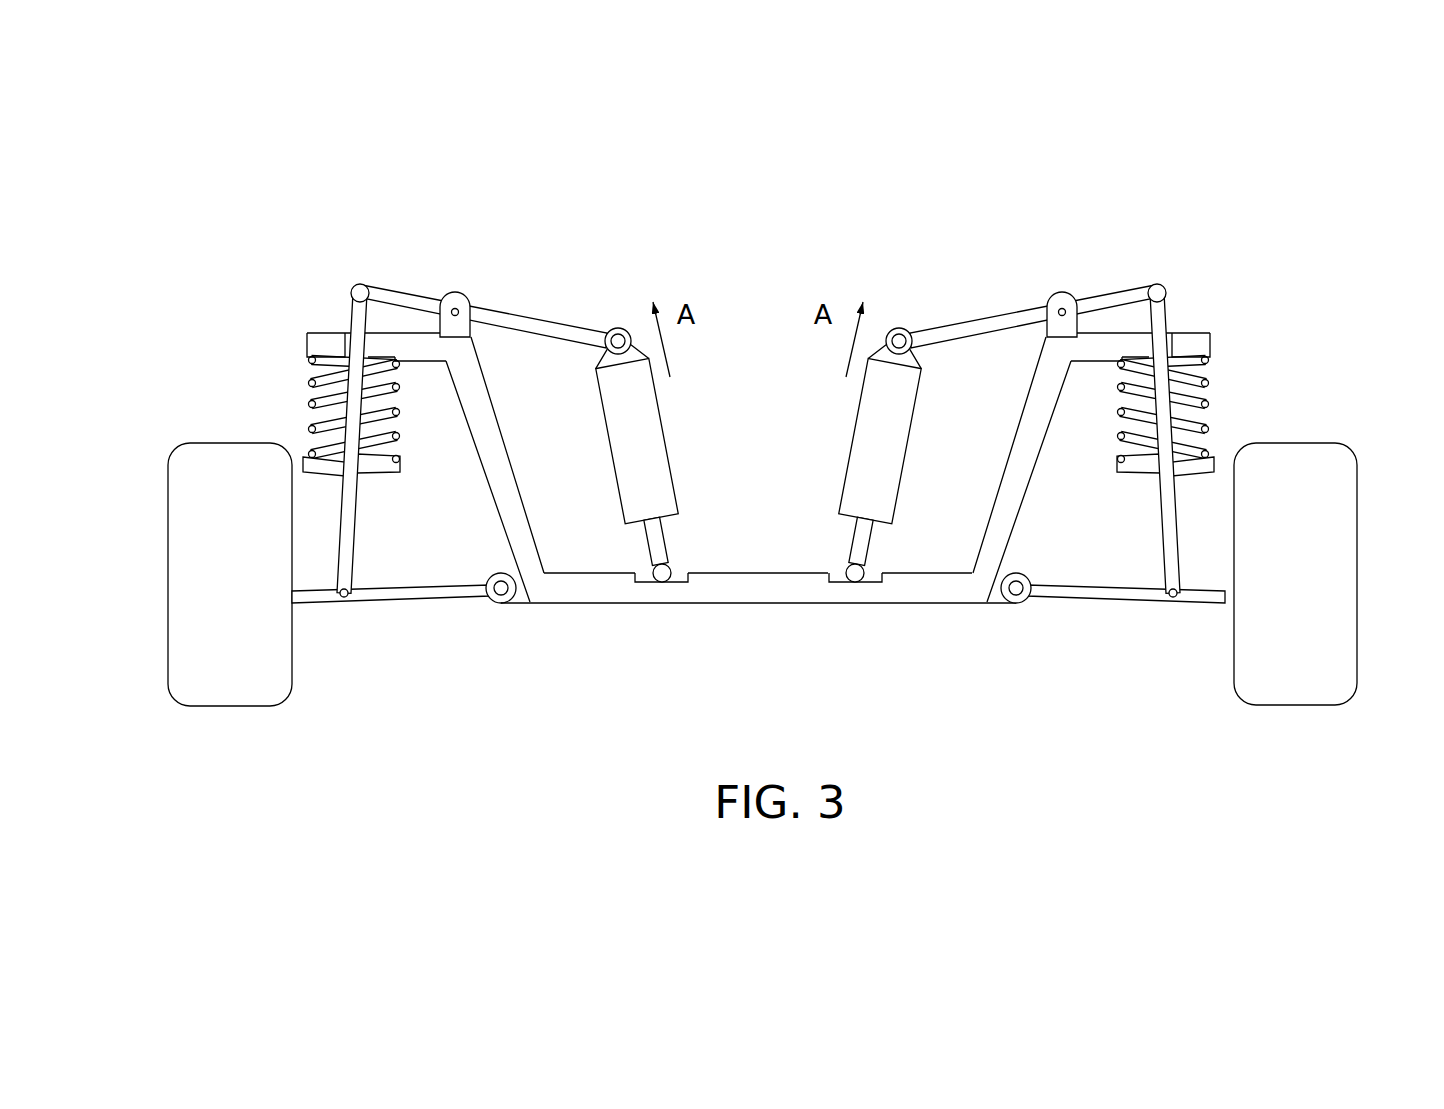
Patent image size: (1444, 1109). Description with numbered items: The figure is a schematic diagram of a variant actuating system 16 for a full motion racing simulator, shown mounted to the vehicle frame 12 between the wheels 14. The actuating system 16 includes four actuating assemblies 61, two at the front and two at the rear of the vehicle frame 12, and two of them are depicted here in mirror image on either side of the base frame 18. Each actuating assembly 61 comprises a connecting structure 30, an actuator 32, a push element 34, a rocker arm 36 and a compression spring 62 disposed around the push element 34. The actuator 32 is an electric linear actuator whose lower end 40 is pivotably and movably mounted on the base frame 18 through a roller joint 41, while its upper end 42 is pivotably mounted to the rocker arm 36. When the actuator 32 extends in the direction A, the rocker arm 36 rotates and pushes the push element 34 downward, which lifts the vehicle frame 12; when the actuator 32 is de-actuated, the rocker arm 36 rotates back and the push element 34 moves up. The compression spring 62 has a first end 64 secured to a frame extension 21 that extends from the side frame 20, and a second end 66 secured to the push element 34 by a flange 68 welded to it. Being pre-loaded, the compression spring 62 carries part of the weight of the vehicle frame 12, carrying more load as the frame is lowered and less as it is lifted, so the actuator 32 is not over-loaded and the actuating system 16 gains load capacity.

The vehicle frame 12 is at (861, 625).
The wheel 14 is at (198, 707).
The actuating system 16 is at (718, 173).
The base frame 18 is at (747, 607).
The side frame 20 is at (480, 477).
The frame extension 21 is at (322, 333).
The connecting structure 30 is at (417, 601).
The actuator 32 is at (668, 452).
The push element 34 is at (340, 540).
The rocker arm 36 is at (495, 303).
The lower end 40 is at (843, 570).
The roller joint 41 is at (652, 580).
The upper end 42 is at (620, 328).
The actuating assembly 61 is at (459, 214).
The compression spring 62 is at (298, 406).
The first end 64 is at (308, 360).
The second end 66 is at (308, 430).
The flange 68 is at (303, 462).